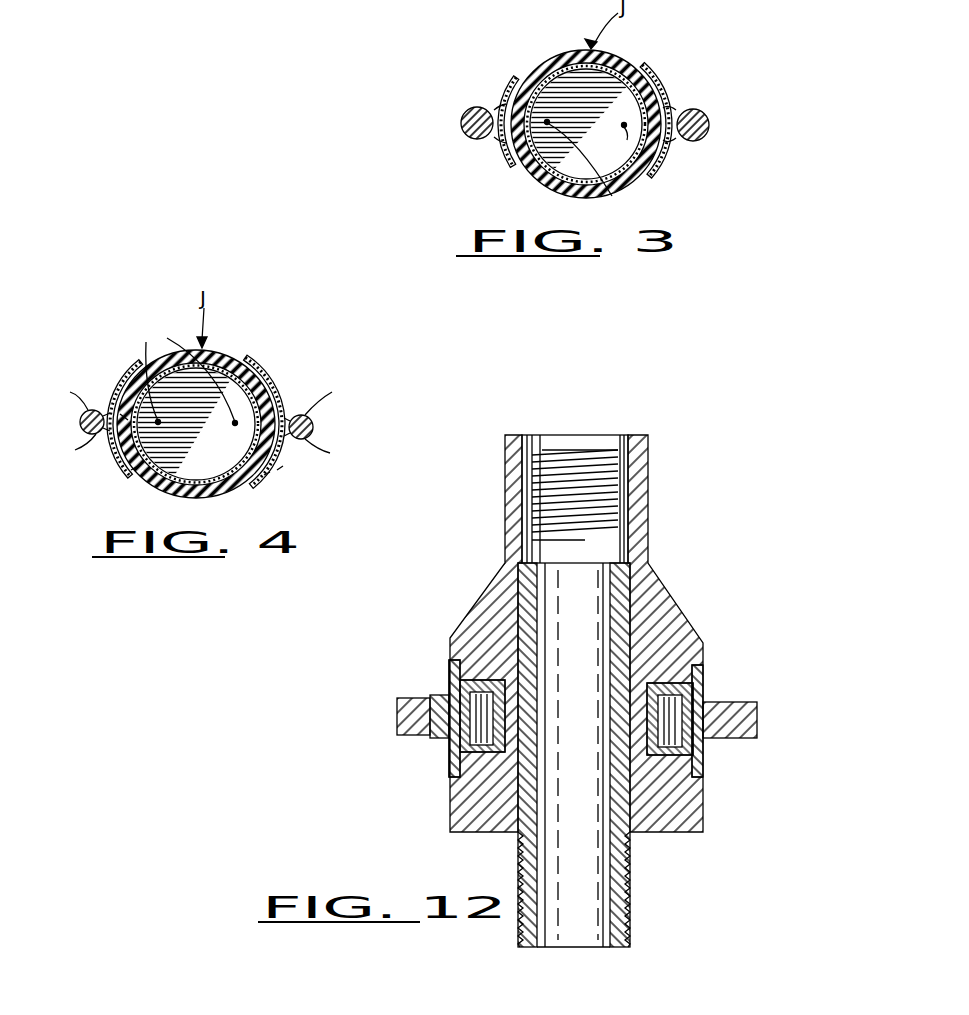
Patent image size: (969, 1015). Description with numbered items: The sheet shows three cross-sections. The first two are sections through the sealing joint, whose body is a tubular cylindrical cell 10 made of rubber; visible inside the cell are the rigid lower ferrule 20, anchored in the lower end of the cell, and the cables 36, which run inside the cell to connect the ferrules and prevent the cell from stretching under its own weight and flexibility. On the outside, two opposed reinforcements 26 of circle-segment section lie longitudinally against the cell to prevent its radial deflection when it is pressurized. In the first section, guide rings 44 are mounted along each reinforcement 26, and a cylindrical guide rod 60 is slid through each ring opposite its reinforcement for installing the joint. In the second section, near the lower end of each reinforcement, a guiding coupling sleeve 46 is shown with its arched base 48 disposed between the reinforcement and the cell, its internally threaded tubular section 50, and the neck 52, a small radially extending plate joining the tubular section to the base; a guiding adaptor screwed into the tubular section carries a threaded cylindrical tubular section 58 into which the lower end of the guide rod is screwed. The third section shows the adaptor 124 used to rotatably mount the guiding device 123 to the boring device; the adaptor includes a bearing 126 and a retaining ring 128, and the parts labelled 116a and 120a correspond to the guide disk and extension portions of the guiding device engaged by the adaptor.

In FIG. 3, the tubular cylindrical cell 10 is at (565, 54).
In FIG. 4, the tubular cylindrical cell 10 is at (216, 352).
In FIG. 3, the lower ferrule 20 is at (602, 88).
In FIG. 4, the lower ferrule 20 is at (180, 466).
In FIG. 3, the reinforcements 26 is at (524, 76).
In FIG. 4, the reinforcements 26 is at (133, 474).
In FIG. 3, the cables 36 is at (632, 172).
In FIG. 4, the cables 36 is at (185, 371).
In FIG. 3, the guide rings 44 is at (502, 108).
In FIG. 3, the guide rod 60 is at (698, 118).
In FIG. 4, the guiding coupling sleeve 46 is at (98, 414).
In FIG. 4, the arched base 48 is at (263, 387).
In FIG. 4, the tubular section 50 is at (82, 423).
In FIG. 4, the neck 52 is at (120, 414).
In FIG. 4, the cylindrical tubular section 58 is at (311, 414).
In FIG. 12, the adaptor 124 is at (660, 542).
In FIG. 12, the guiding device 123 is at (710, 666).
In FIG. 12, the bearing 126 is at (705, 697).
In FIG. 12, the retaining ring 128 is at (448, 670).
In FIG. 12, the flange portion 116a is at (400, 735).
In FIG. 12, the flange portion 120a is at (747, 739).